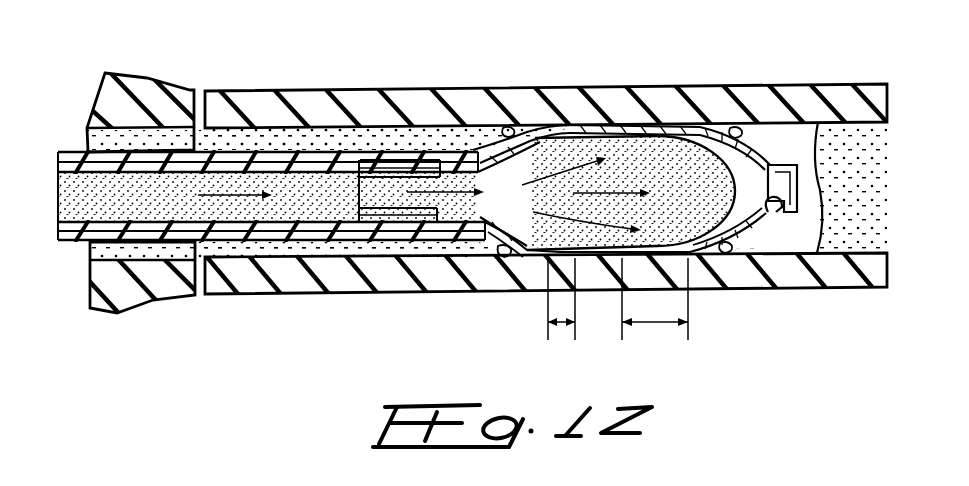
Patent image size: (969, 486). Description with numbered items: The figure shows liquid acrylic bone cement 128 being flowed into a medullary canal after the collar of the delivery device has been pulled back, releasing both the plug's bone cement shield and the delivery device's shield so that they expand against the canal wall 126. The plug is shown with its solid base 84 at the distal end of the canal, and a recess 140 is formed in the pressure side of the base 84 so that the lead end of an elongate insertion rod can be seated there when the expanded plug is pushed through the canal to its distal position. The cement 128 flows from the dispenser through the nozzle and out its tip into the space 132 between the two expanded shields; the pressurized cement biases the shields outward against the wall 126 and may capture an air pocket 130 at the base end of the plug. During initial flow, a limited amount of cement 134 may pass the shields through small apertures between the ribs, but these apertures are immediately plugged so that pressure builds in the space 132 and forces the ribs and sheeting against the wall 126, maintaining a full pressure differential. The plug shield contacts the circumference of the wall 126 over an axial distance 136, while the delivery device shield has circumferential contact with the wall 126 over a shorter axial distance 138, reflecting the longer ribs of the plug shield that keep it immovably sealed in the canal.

The solid base 84 is at (790, 168).
The canal wall 126 is at (416, 124).
The liquid acrylic bone cement 128 is at (540, 228).
The air pocket 130 is at (744, 166).
The space 132 is at (682, 184).
The cement 134 is at (504, 126).
The axial distance 136 is at (660, 322).
The axial distance 138 is at (562, 324).
The recess 140 is at (782, 206).